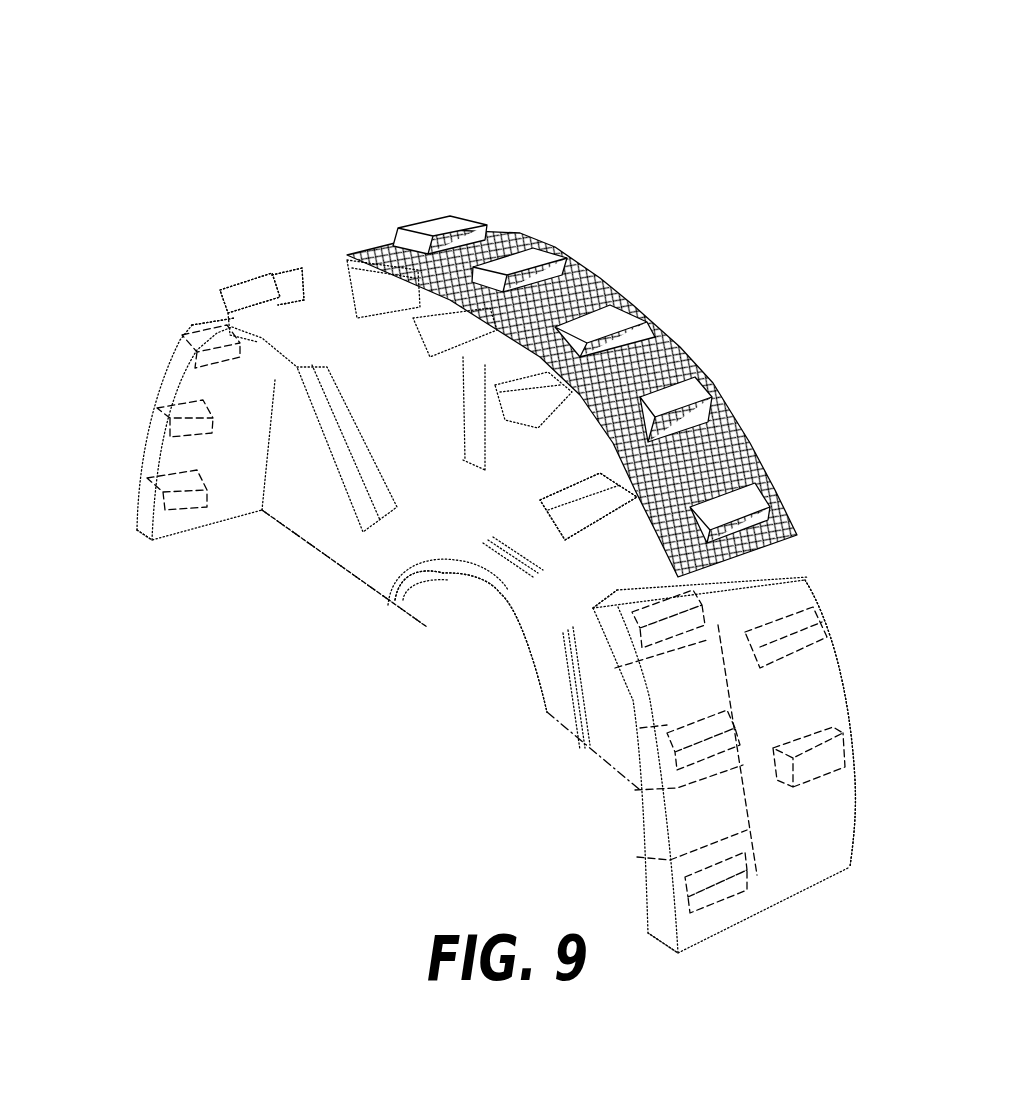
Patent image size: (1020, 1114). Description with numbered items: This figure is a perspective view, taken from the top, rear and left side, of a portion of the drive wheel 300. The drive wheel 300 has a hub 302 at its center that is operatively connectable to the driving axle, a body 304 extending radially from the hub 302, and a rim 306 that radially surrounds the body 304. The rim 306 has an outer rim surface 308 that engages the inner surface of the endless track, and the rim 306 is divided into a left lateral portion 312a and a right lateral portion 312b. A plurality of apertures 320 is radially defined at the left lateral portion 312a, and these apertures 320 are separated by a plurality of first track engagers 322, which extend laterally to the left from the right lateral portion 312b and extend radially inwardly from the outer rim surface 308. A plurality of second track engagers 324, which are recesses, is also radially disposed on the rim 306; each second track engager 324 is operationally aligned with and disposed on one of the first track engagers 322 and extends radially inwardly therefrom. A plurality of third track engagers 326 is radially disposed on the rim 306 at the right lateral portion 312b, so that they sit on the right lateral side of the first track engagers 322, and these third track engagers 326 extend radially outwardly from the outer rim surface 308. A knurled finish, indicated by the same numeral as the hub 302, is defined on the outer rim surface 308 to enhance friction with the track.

The drive wheel 300 is at (175, 606).
The hub 302 is at (747, 457).
The body 304 is at (597, 738).
The rim 306 is at (663, 928).
The outer rim surface 308 is at (820, 827).
The left lateral portion 312a is at (152, 302).
The right lateral portion 312b is at (478, 168).
The apertures 320 is at (192, 300).
The first track engagers 322 is at (232, 320).
The second track engagers 324 is at (393, 257).
The third track engagers 326 is at (457, 217).